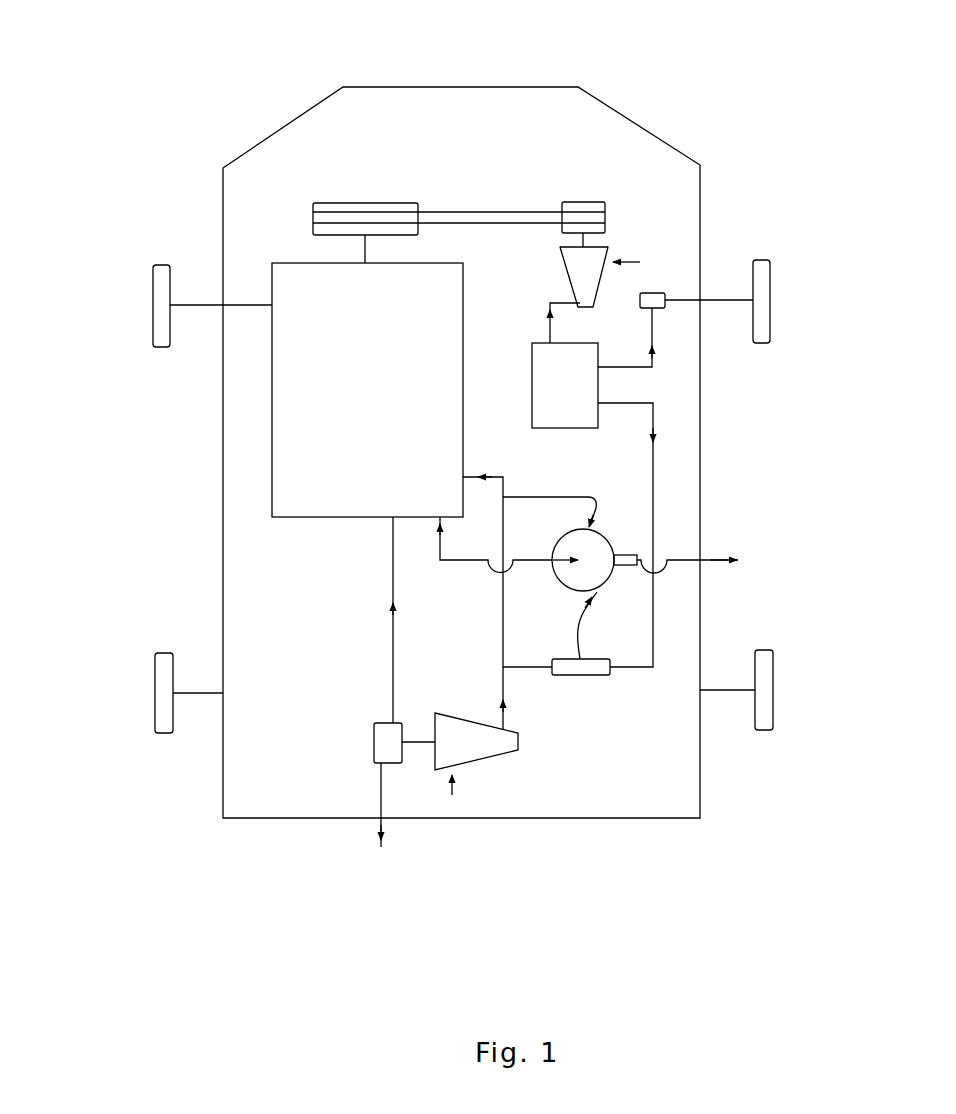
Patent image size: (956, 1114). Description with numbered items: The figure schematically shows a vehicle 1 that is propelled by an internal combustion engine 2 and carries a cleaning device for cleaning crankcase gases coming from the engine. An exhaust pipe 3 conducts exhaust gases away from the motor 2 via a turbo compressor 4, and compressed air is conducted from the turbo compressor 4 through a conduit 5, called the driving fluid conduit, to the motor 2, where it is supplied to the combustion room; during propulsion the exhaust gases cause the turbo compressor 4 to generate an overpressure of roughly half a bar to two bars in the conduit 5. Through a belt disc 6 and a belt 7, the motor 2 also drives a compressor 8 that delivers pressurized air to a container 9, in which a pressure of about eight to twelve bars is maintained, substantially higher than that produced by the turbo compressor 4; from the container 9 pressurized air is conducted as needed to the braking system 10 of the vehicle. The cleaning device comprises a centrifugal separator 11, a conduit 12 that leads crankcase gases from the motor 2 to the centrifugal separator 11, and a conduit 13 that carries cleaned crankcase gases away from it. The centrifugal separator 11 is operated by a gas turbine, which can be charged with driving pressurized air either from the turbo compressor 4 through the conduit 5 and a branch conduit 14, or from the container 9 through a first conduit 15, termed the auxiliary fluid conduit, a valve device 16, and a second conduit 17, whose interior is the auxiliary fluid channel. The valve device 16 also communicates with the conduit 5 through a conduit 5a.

The vehicle 1 is at (320, 158).
The internal combustion engine 2 is at (300, 408).
The exhaust pipe 3 is at (392, 655).
The turbo compressor 4 is at (478, 775).
The conduit 5 is at (505, 722).
The conduit 5a is at (532, 670).
The belt disc 6 is at (405, 208).
The belt 7 is at (502, 217).
The compressor 8 is at (632, 245).
The container 9 is at (578, 395).
The braking system 10 is at (657, 293).
The centrifugal separator 11 is at (597, 550).
The conduit 12 is at (460, 562).
The conduit 13 is at (687, 560).
The branch conduit 14 is at (562, 498).
The first conduit 15 is at (657, 613).
The valve device 16 is at (597, 668).
The second conduit 17 is at (577, 640).